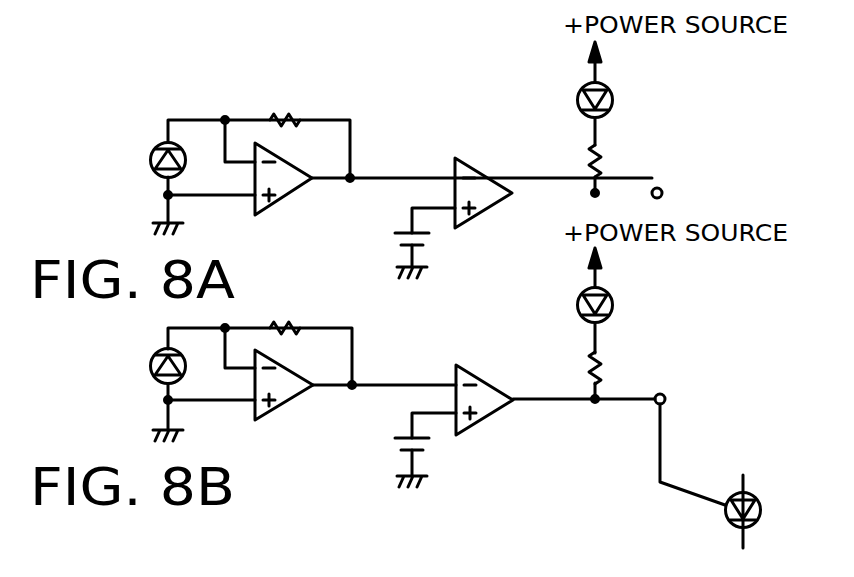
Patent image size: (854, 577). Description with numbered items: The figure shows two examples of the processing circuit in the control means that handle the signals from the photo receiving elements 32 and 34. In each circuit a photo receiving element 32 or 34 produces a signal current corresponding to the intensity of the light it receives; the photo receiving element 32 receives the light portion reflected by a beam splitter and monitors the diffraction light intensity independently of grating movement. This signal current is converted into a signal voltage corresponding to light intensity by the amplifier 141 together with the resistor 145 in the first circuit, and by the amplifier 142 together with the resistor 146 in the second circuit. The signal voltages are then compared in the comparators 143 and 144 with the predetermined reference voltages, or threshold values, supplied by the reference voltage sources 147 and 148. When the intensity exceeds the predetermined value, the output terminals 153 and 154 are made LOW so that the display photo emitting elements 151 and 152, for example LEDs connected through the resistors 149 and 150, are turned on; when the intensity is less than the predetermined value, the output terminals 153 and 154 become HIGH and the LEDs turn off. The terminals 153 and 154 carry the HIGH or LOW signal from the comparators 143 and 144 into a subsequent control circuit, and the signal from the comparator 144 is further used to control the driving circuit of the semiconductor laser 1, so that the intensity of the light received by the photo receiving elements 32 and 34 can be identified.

In FIG. 8A, the photo receiving element 32 is at (150, 150).
In FIG. 8B, the photo receiving element 34 is at (152, 358).
In FIG. 8A, the amplifier 141 is at (293, 200).
In FIG. 8B, the amplifier 142 is at (292, 402).
In FIG. 8A, the comparator 143 is at (482, 170).
In FIG. 8B, the comparator 144 is at (497, 383).
In FIG. 8A, the resistor 145 is at (287, 108).
In FIG. 8B, the resistor 146 is at (275, 322).
In FIG. 8A, the reference voltage source 147 is at (425, 237).
In FIG. 8B, the reference voltage source 148 is at (423, 442).
In FIG. 8A, the resistor 149 is at (600, 160).
In FIG. 8B, the resistor 150 is at (598, 365).
In FIG. 8A, the display photo emitting element 151 is at (615, 100).
In FIG. 8B, the display photo emitting element 152 is at (620, 307).
In FIG. 8A, the output terminal 153 is at (663, 193).
In FIG. 8B, the output terminal 154 is at (666, 399).
In FIG. 8B, the semiconductor laser 1 is at (763, 498).